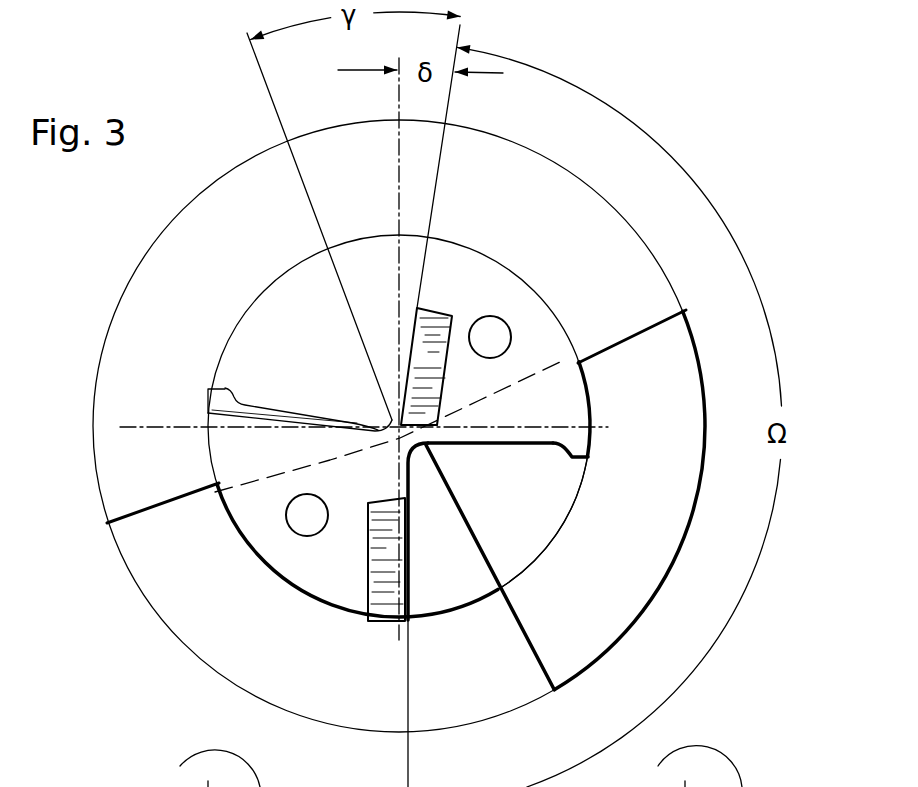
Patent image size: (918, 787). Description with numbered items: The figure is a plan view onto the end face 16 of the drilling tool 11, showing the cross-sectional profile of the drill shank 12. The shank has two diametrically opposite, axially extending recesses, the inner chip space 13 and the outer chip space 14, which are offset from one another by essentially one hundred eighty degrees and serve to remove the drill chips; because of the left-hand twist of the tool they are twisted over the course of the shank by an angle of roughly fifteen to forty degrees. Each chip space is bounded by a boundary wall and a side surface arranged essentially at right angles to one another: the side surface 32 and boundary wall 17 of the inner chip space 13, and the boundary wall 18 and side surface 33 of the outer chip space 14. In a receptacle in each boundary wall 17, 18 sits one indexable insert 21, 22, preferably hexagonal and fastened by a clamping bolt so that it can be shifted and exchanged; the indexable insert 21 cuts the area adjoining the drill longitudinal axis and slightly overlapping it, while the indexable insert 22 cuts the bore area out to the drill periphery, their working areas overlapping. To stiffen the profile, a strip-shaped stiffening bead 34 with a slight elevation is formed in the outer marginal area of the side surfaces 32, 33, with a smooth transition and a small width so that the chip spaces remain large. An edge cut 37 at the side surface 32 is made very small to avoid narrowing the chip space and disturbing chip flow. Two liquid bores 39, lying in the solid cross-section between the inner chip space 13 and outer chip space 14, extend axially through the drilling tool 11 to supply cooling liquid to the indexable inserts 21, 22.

The drilling tool 11 is at (683, 138).
The drill shank 12 is at (622, 268).
The inner chip space 13 is at (235, 308).
The outer chip space 14 is at (560, 537).
The end face 16 is at (257, 595).
The boundary wall 17 is at (370, 278).
The boundary wall 18 is at (428, 530).
The indexable insert 21 is at (442, 305).
The indexable insert 22 is at (386, 616).
The side surface 32 is at (283, 410).
The side surface 33 is at (530, 445).
The stiffening bead 34 is at (585, 460).
The edge cut 37 is at (217, 402).
The liquid bore 39 is at (285, 515).